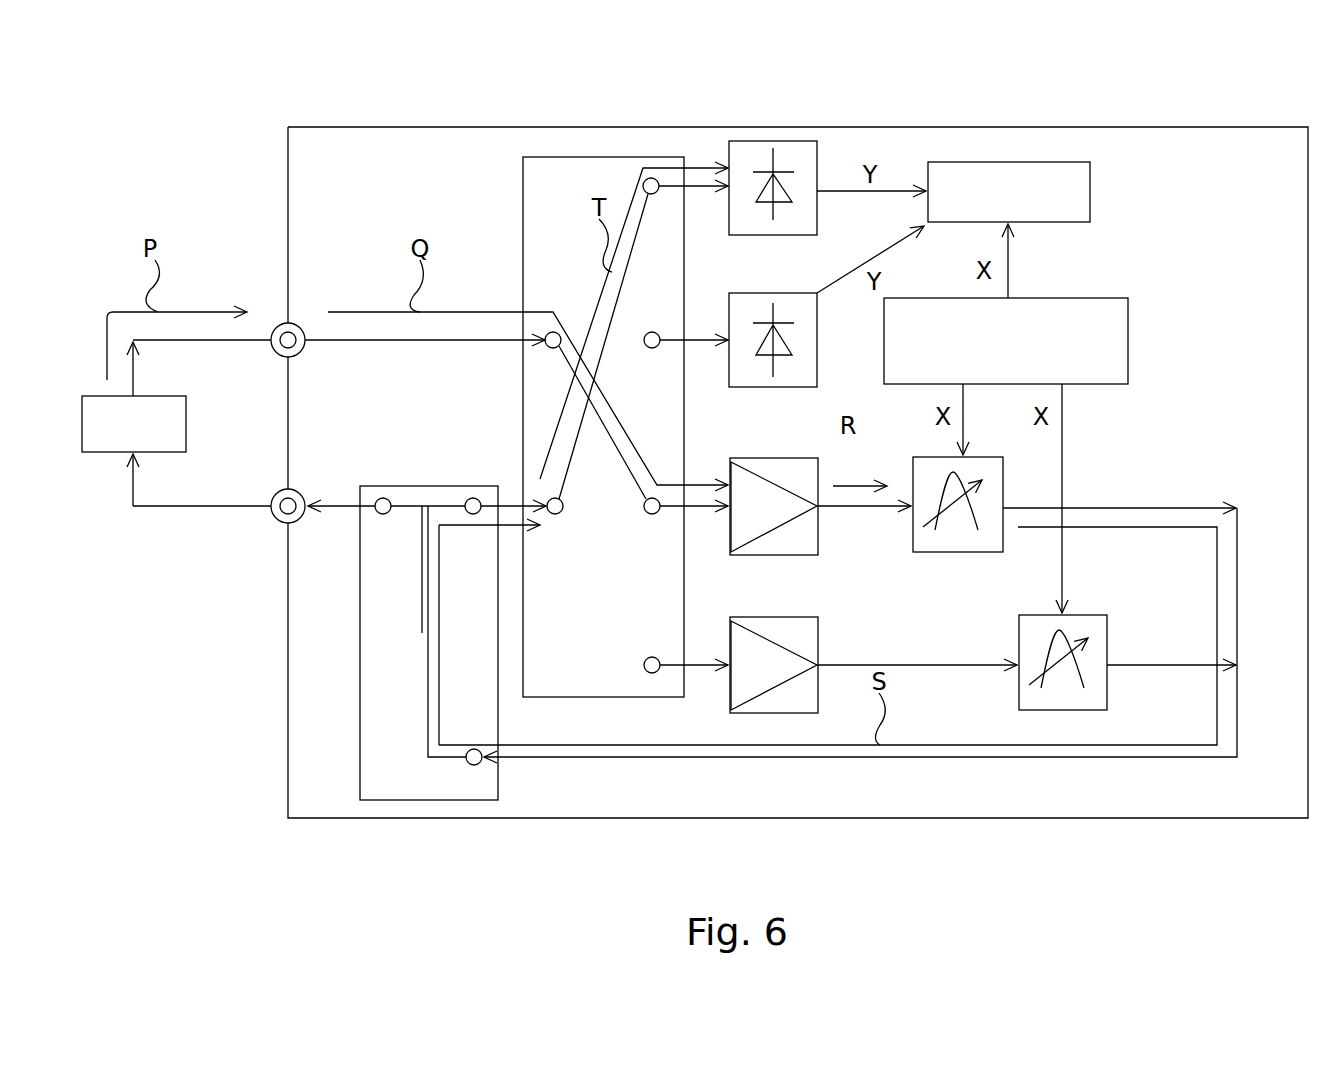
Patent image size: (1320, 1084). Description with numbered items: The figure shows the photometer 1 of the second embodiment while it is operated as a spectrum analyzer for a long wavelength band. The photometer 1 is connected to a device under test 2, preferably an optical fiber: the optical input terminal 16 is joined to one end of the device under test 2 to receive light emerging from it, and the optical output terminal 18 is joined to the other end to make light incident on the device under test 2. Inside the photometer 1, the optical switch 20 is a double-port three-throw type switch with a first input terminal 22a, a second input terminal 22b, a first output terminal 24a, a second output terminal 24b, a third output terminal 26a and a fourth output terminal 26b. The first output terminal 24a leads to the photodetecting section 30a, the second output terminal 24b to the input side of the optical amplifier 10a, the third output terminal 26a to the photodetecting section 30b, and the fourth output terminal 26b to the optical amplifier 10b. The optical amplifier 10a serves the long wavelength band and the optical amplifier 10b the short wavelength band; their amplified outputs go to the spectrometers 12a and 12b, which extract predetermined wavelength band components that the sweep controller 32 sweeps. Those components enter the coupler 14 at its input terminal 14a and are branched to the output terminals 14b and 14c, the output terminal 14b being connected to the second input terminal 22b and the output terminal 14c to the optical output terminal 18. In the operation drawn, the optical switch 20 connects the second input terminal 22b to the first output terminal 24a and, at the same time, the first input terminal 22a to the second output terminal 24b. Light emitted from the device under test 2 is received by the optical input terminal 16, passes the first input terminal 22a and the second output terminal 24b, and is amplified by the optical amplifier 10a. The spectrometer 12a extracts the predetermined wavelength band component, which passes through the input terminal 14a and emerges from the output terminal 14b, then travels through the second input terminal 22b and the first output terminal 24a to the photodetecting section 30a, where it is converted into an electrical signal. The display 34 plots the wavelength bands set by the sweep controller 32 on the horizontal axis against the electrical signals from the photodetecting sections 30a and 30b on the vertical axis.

The photometer 1 is at (736, 127).
The device under test (DUT) 2 is at (186, 423).
The optical amplifier 10a is at (810, 458).
The optical amplifier 10b is at (806, 617).
The spectrometer 12a is at (925, 457).
The spectrometer 12b is at (1097, 615).
The coupler 14 is at (440, 486).
The input terminal 14a is at (478, 750).
The output terminal 14b is at (473, 498).
The output terminal 14c is at (383, 498).
The optical input terminal 16 is at (300, 324).
The optical output terminal 18 is at (300, 490).
The optical switch 20 is at (523, 205).
The first input terminal 22a is at (548, 333).
The second input terminal 22b is at (560, 513).
The first output terminal 24a is at (658, 193).
The second output terminal 24b is at (658, 513).
The third output terminal 26a is at (658, 347).
The fourth output terminal 26b is at (658, 672).
The photodetecting section 30a is at (795, 141).
The photodetecting section 30b is at (790, 293).
The sweep controller 32 is at (1129, 345).
The display 34 is at (1091, 191).